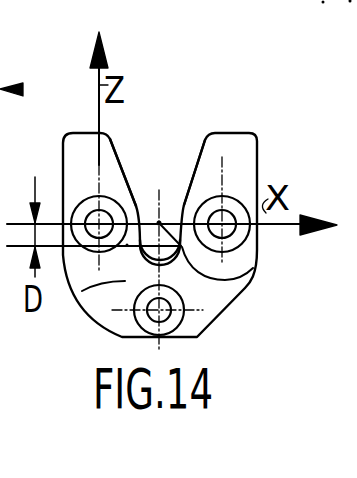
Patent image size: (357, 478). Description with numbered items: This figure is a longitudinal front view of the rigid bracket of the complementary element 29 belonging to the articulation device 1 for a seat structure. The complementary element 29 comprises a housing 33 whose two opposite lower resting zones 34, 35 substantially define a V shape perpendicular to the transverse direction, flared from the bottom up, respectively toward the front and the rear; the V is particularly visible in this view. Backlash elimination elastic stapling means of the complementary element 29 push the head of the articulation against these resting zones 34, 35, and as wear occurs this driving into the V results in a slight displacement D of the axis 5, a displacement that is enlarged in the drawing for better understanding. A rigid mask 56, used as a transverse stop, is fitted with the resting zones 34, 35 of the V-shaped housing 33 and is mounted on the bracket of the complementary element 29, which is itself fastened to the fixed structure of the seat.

The articulation device 1 is at (268, 122).
The complementary element 29 is at (180, 179).
The housing 33 is at (169, 148).
The lower resting zone 34 is at (198, 167).
The lower resting zone 35 is at (130, 170).
The axis 5 is at (251, 275).
The rigid mask 56 is at (82, 291).